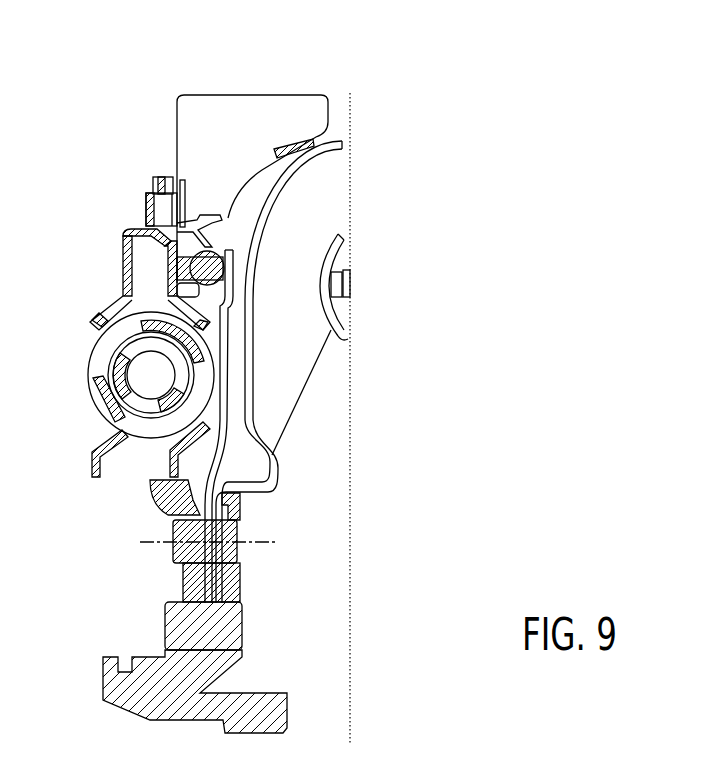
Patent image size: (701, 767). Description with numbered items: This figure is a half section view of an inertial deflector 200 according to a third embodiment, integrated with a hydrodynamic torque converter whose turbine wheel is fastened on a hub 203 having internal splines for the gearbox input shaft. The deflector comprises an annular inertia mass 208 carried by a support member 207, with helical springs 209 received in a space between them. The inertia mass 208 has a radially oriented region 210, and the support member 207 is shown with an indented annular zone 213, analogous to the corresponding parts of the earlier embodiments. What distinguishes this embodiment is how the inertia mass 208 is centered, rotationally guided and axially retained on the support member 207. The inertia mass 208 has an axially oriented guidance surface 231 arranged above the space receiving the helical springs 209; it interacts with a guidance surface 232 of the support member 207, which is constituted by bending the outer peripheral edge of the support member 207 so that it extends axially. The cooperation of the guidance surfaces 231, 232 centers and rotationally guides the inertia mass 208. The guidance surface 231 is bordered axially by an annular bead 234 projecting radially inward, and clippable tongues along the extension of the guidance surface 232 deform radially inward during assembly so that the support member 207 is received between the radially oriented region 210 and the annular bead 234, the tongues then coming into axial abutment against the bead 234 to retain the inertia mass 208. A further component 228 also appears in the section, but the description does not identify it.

The inertial deflector 200 is at (338, 88).
The hub 203 is at (193, 653).
The support member 207 is at (227, 423).
The inertia mass 208 is at (178, 150).
The helical springs 209 is at (214, 251).
The radially oriented region 210 is at (190, 292).
The indented annular zone 213 is at (188, 231).
The seal element 228 is at (225, 276).
The guidance surface 231 is at (210, 217).
The guidance surface 232 is at (165, 222).
The annular bead 234 is at (183, 213).